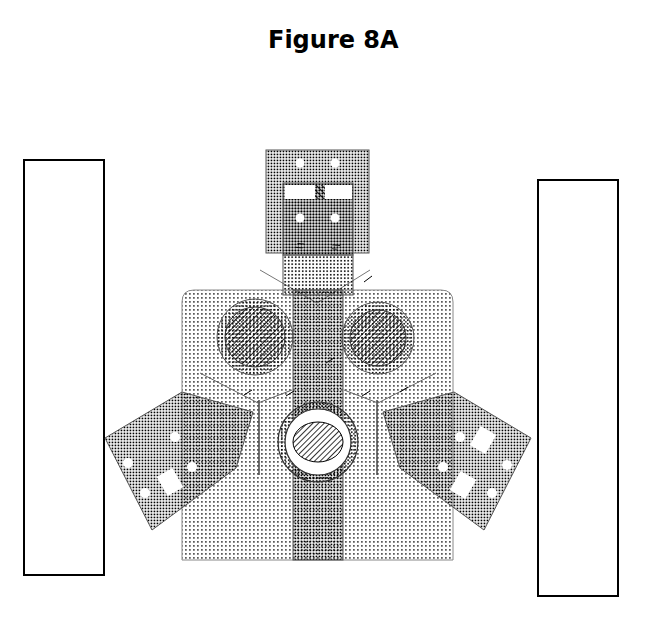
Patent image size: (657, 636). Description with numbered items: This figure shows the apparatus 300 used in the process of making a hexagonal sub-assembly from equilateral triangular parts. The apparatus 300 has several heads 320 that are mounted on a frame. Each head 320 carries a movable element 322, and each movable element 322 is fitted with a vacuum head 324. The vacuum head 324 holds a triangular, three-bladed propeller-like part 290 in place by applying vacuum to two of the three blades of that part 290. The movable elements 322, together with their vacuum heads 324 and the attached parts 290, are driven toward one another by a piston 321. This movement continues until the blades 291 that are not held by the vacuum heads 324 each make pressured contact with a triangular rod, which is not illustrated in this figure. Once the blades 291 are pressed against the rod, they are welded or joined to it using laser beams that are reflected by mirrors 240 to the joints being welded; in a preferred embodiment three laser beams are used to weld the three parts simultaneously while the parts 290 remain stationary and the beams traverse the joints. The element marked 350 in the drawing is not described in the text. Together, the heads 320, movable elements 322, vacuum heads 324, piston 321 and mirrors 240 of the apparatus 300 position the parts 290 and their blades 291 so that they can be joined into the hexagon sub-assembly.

The apparatus 300 is at (441, 136).
The head 320 is at (275, 258).
The piston 321 is at (318, 197).
The movable element 322 is at (302, 240).
The vacuum head 324 is at (300, 280).
The mirror 240 is at (222, 338).
The triangular 3-bladed propeller-like part 290 is at (250, 391).
The blade 291 is at (290, 392).
The central support column 350 is at (342, 535).